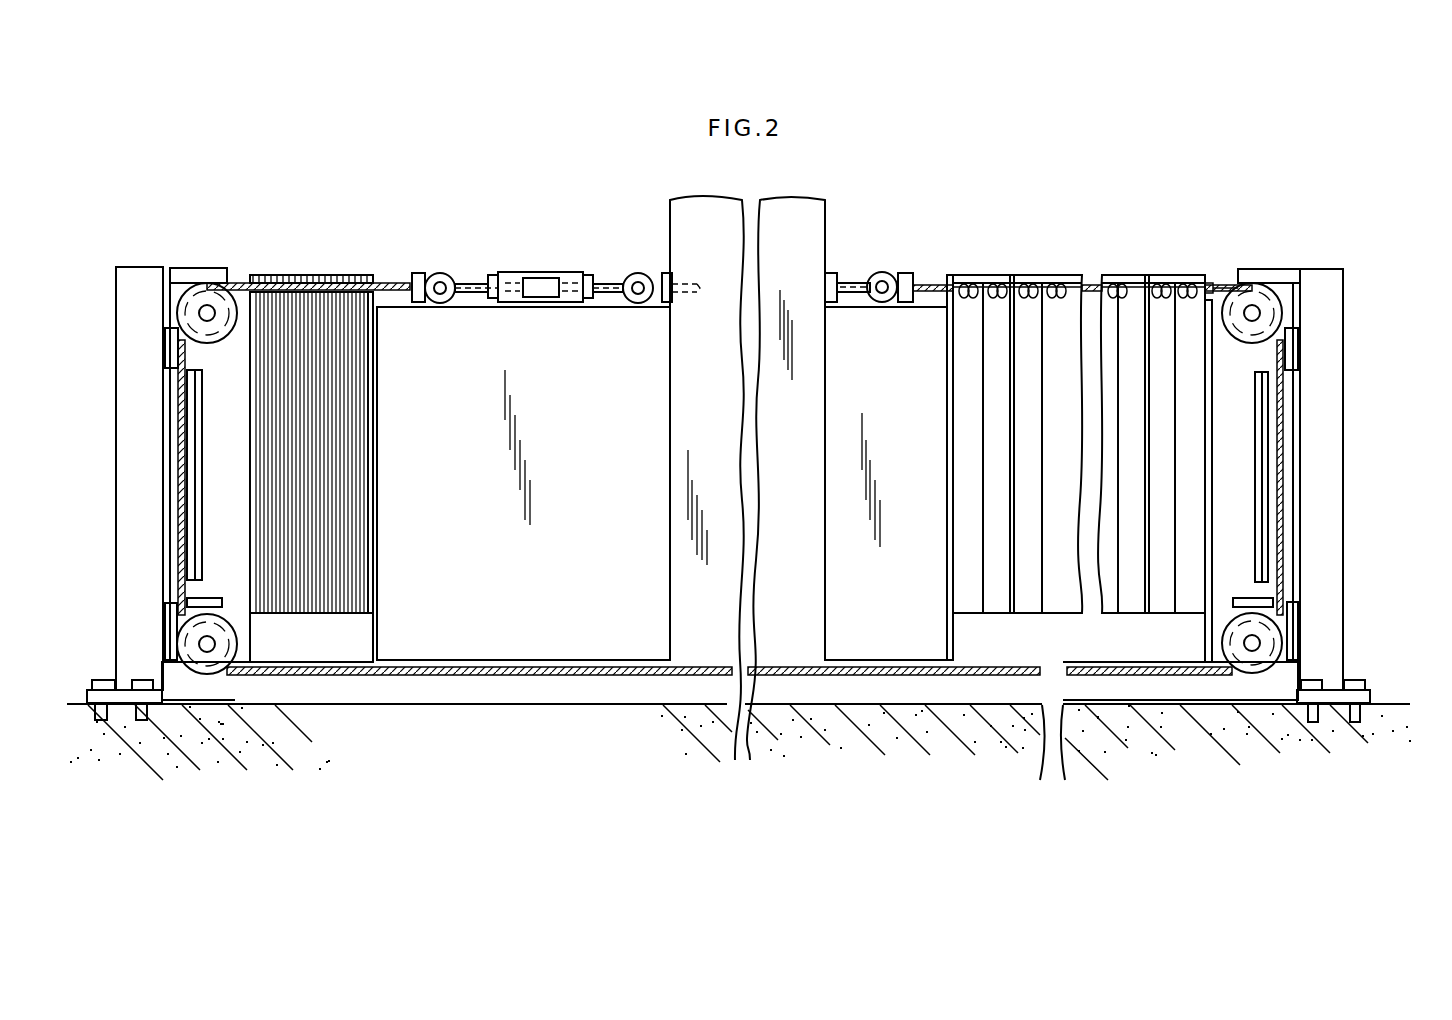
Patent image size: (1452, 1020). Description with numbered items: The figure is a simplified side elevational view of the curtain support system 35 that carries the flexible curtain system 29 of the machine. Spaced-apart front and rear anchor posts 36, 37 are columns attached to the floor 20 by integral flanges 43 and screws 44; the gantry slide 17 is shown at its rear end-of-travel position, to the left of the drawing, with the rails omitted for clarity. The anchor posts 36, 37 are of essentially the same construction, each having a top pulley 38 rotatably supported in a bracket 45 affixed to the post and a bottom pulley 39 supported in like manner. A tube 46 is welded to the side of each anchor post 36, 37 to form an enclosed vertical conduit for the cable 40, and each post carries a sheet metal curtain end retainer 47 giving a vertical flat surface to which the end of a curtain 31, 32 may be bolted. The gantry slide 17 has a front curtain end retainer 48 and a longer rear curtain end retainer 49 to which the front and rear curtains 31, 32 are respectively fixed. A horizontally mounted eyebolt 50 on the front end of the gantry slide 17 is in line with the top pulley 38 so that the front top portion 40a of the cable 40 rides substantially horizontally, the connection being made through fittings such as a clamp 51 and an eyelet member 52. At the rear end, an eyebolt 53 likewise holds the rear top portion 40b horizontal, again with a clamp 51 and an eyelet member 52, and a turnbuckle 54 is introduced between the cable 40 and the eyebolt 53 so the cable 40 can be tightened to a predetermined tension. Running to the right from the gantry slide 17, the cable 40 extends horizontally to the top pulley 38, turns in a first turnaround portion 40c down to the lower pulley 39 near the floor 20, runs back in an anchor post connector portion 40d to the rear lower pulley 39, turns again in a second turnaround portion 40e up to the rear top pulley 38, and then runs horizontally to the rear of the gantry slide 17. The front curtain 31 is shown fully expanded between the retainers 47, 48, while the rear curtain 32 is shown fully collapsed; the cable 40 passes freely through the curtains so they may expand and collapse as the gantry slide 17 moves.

The gantry slide 17 is at (716, 422).
The floor 20 is at (805, 703).
The flexible curtain system 29 is at (1039, 252).
The front curtain 31 is at (992, 614).
The rear curtain 32 is at (318, 501).
The curtain support system 35 is at (1212, 275).
The front anchor post 36 is at (1343, 338).
The rear anchor post 37 is at (116, 300).
The top pulley 38 is at (200, 283).
The bottom pulley 39 is at (205, 675).
The cable 40 is at (1228, 283).
The front top portion 40a is at (1107, 288).
The rear top portion 40b is at (306, 283).
The first turnaround portion 40c is at (1283, 415).
The anchor post connector portion 40d is at (537, 676).
The second turnaround portion 40e is at (180, 410).
The integral flange 43 is at (87, 697).
The screw 44 is at (100, 680).
The bracket 45 is at (1295, 268).
The tube 46 is at (187, 478).
The curtain end retainer 47 is at (252, 636).
The front curtain end retainer 48 is at (895, 615).
The rear curtain end retainer 49 is at (494, 572).
The eyebolt 50 is at (845, 280).
The clamp 51 is at (418, 273).
The eyelet member 52 is at (445, 273).
The eyebolt 53 is at (645, 273).
The turnbuckle 54 is at (520, 272).